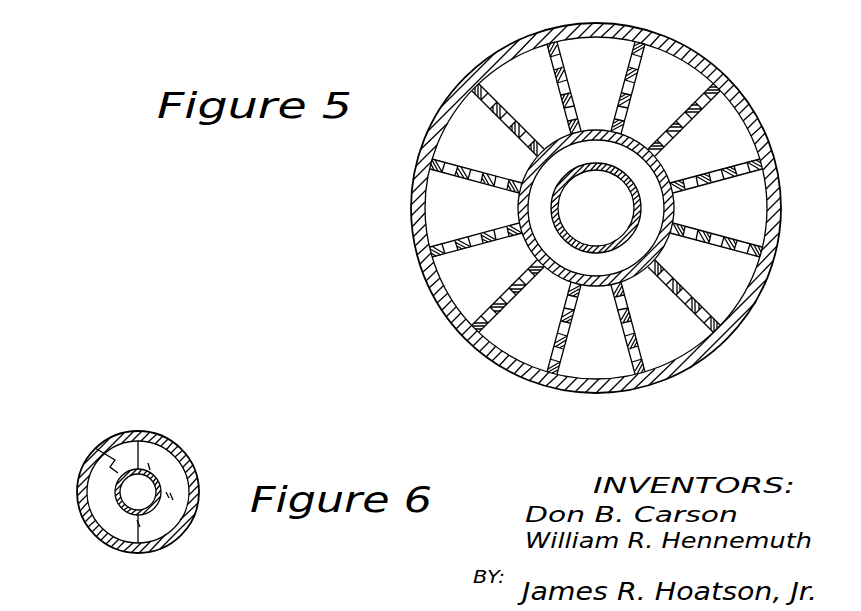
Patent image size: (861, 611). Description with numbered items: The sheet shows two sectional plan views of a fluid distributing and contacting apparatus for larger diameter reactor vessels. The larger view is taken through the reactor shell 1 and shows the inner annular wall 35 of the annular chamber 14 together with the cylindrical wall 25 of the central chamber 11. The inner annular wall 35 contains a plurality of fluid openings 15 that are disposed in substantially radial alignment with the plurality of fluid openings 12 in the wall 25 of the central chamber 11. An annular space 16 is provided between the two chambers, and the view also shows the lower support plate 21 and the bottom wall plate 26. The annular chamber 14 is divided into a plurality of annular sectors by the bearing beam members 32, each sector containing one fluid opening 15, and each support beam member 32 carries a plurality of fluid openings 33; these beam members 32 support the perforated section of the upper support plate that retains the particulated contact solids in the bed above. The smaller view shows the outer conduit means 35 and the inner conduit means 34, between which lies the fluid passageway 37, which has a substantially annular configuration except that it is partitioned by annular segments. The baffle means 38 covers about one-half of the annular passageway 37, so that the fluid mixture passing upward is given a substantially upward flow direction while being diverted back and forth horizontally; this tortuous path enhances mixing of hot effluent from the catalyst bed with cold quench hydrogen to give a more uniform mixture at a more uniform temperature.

In FIG. 5, the reactor shell 1 is at (480, 351).
In FIG. 5, the central chamber 11 is at (618, 230).
In FIG. 5, the fluid openings 12 is at (578, 145).
In FIG. 5, the annular chamber 14 is at (483, 225).
In FIG. 5, the fluid openings 15 is at (667, 170).
In FIG. 5, the annular space 16 is at (630, 163).
In FIG. 5, the lower support plate 21 is at (474, 298).
In FIG. 5, the cylindrical wall 25 is at (560, 196).
In FIG. 5, the bottom wall plate 26 is at (592, 228).
In FIG. 5, the bearing beam members 32 is at (497, 110).
In FIG. 5, the fluid openings 33 is at (501, 121).
In FIG. 5, the inner annular wall 35 is at (607, 129).
In FIG. 6, the inner annular wall 35 is at (80, 498).
In FIG. 6, the inner conduit means 34 is at (95, 448).
In FIG. 6, the annular fluid passageway 37 is at (163, 463).
In FIG. 6, the baffle means 38 is at (150, 453).